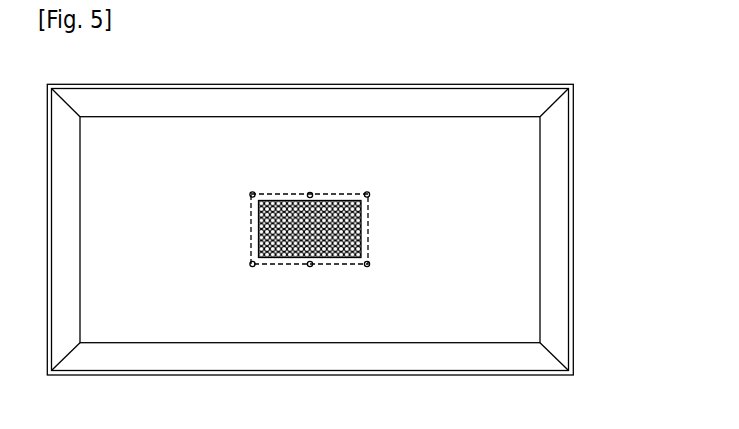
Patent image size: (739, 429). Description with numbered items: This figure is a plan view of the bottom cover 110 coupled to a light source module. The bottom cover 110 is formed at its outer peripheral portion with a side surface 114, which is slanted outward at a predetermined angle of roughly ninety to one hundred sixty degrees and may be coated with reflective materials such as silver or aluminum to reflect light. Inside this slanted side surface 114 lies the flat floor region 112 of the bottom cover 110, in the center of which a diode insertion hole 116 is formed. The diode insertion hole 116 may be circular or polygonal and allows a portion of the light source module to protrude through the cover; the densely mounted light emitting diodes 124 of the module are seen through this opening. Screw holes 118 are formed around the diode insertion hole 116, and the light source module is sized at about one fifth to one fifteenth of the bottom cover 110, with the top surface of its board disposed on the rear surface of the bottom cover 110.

The bottom cover 110 is at (570, 310).
The bottom plate 112 is at (468, 142).
The side surface 114 is at (552, 218).
The diode insertion hole 116 is at (295, 202).
The screw holes 118 is at (252, 192).
The light emitting diodes 124 is at (345, 193).